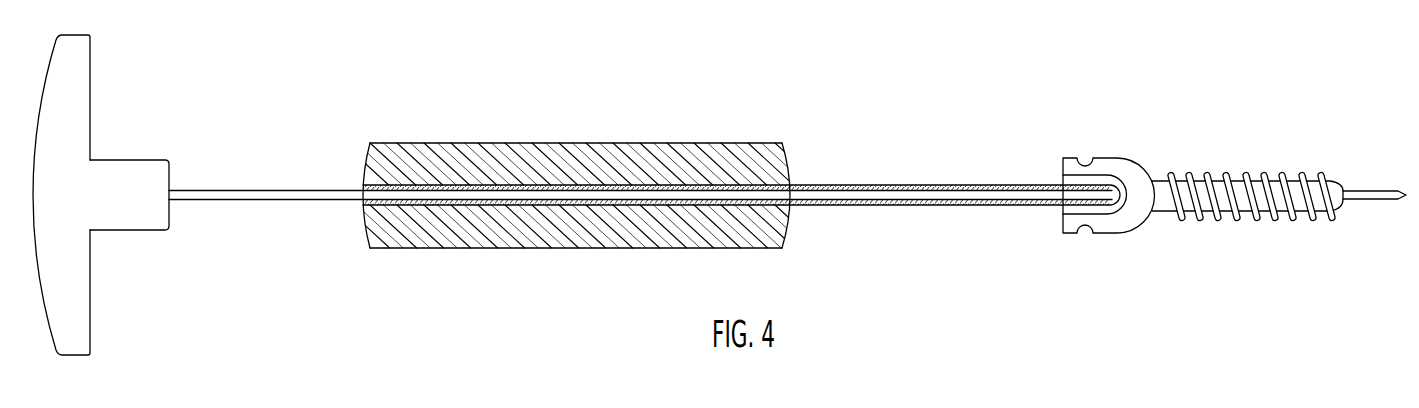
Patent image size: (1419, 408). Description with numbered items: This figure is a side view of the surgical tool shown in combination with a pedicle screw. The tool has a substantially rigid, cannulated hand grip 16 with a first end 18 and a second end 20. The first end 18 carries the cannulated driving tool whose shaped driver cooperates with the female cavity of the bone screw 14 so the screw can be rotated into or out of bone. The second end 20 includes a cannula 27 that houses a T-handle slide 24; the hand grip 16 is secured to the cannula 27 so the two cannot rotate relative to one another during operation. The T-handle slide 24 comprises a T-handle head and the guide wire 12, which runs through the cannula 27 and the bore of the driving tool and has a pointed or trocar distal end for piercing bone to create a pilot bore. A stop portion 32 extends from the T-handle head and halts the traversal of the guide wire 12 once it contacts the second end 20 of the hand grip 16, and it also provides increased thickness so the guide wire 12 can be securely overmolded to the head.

The guide wire 12 is at (1368, 200).
The bone screw 14 is at (1118, 158).
The hand grip 16 is at (600, 143).
The first end 18 is at (783, 143).
The second end 20 is at (370, 143).
The T-handle slide 24 is at (78, 127).
The cannula 27 is at (485, 186).
The stop portion 32 is at (128, 218).